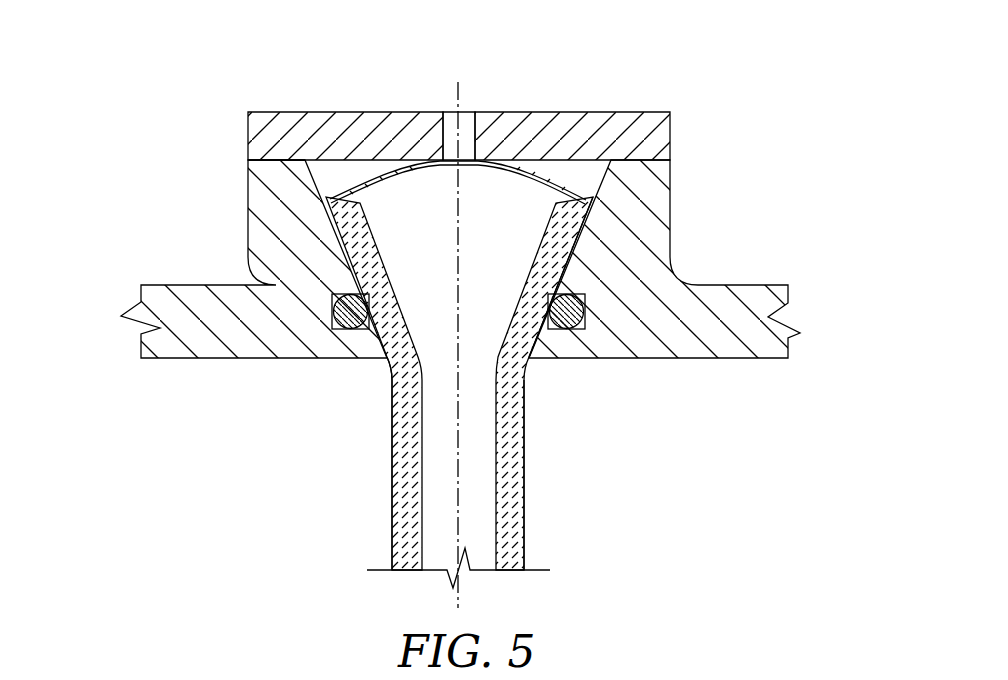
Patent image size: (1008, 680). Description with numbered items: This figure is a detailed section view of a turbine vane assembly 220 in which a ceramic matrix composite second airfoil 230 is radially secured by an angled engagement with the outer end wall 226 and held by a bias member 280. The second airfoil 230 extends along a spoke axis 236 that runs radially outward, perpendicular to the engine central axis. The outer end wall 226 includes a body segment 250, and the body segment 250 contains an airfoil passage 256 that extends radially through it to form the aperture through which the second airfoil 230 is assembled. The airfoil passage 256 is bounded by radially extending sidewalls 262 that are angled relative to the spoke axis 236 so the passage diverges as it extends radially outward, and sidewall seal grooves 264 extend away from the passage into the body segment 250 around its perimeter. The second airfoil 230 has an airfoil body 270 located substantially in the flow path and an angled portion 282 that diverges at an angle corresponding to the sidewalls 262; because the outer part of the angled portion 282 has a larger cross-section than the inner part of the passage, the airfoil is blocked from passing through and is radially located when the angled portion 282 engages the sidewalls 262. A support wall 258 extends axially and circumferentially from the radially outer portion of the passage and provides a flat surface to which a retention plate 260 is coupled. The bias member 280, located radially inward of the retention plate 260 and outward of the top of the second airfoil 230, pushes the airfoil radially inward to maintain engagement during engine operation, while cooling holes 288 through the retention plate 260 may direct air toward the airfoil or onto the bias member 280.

The turbine vane assembly 220 is at (475, 219).
The outer end wall 226 is at (723, 267).
The second airfoil 230 is at (525, 478).
The spoke axis 236 is at (459, 597).
The body segment 250 is at (282, 367).
The airfoil passage 256 is at (387, 358).
The support wall 258 is at (257, 152).
The retention plate 260 is at (312, 132).
The radially extending sidewalls 262 is at (342, 236).
The sidewall seal grooves 264 is at (332, 313).
The airfoil body 270 is at (526, 443).
The bias member 280 is at (526, 178).
The angled portion 282 is at (567, 243).
The cooling holes 288 is at (465, 104).